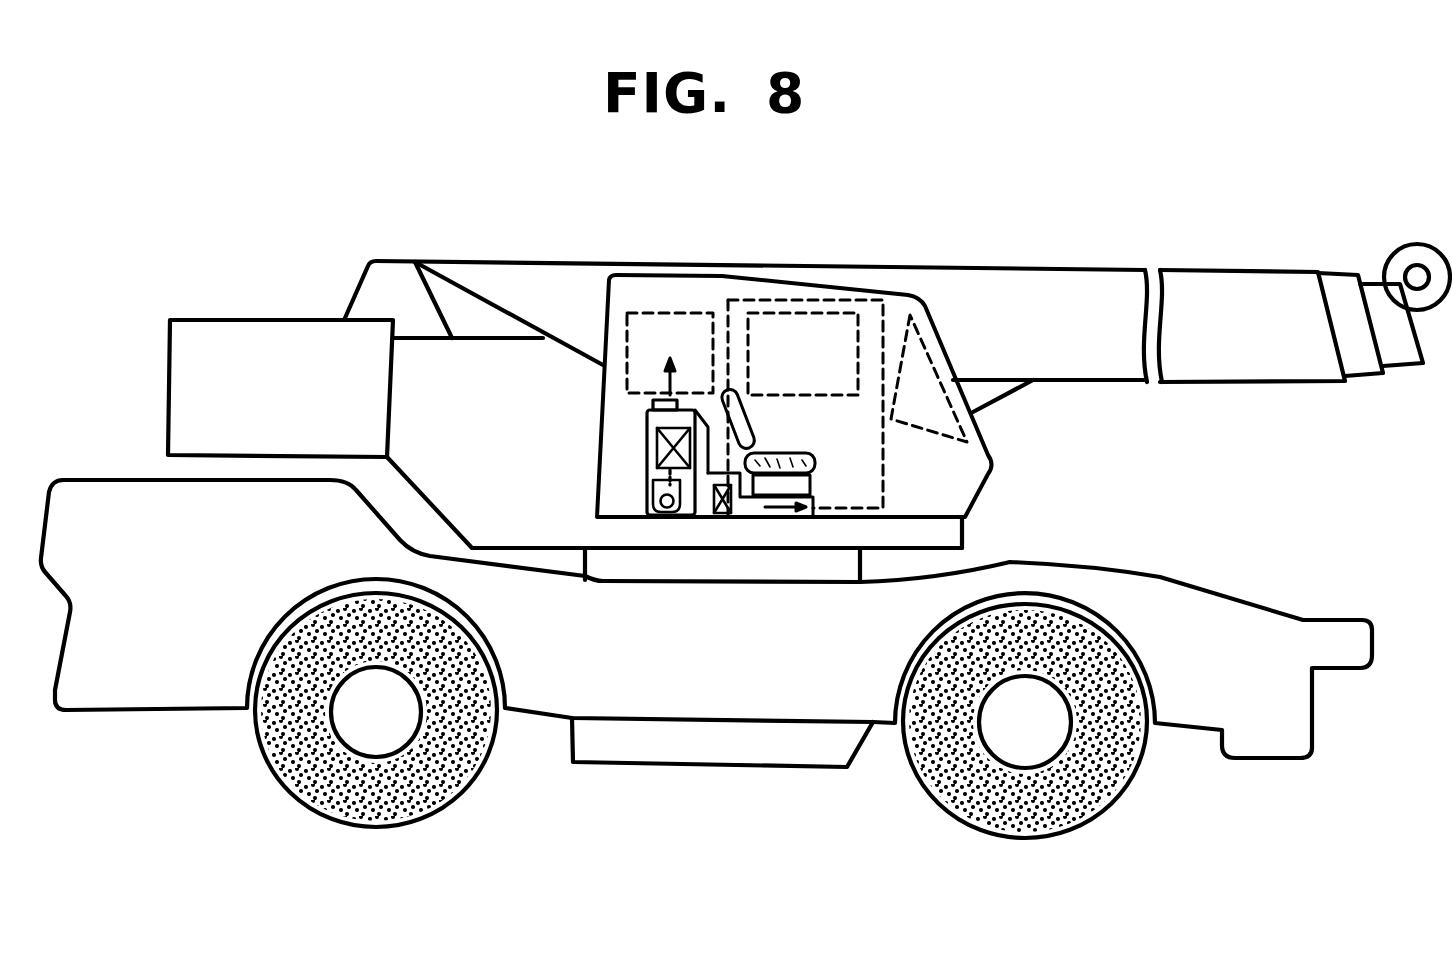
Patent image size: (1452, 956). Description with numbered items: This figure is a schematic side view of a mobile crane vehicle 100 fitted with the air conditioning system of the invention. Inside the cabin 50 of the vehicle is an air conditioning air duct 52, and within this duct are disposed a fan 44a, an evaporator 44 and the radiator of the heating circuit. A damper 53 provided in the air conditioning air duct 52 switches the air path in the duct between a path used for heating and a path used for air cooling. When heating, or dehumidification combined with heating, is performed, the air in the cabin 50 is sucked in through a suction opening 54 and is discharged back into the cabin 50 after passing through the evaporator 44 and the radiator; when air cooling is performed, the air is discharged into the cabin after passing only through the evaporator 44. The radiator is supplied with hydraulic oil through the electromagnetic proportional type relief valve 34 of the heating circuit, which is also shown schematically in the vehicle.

The mobile crane vehicle 100 is at (782, 210).
The cabin 50 is at (891, 292).
The damper 53 is at (708, 425).
The evaporator 44 is at (647, 437).
The fan 44a is at (665, 517).
The air conditioning air duct 52 is at (647, 469).
The suction opening 54 is at (647, 497).
The electromagnetic proportional type relief valve 34 is at (727, 517).